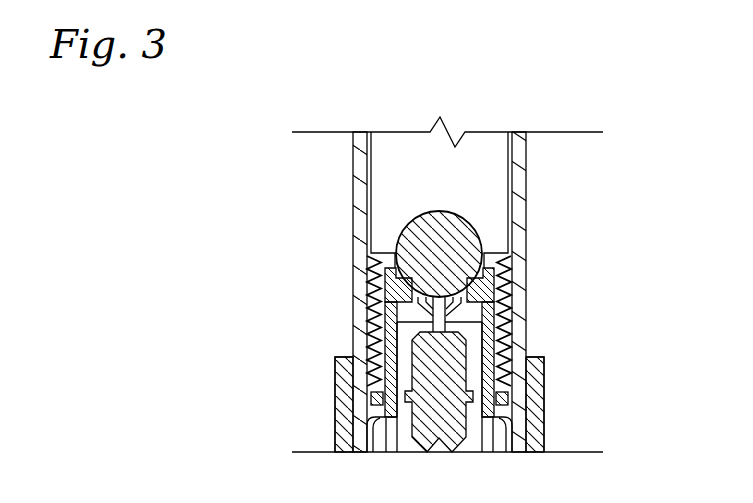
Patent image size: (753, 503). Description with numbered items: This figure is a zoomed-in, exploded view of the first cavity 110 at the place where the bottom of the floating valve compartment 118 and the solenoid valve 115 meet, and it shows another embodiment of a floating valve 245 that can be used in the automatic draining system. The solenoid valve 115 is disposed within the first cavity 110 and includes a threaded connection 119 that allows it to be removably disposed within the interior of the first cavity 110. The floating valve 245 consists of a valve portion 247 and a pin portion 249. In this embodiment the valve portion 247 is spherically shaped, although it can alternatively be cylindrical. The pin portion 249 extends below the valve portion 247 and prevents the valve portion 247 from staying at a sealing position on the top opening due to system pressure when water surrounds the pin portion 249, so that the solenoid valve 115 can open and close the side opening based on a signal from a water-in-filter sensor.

The first cavity 110 is at (367, 400).
The solenoid valve 115 is at (490, 350).
The floating valve compartment 118 is at (490, 182).
The threaded connection 119 is at (500, 320).
The floating valve 245 is at (488, 226).
The valve portion 247 is at (403, 230).
The pin portion 249 is at (378, 333).